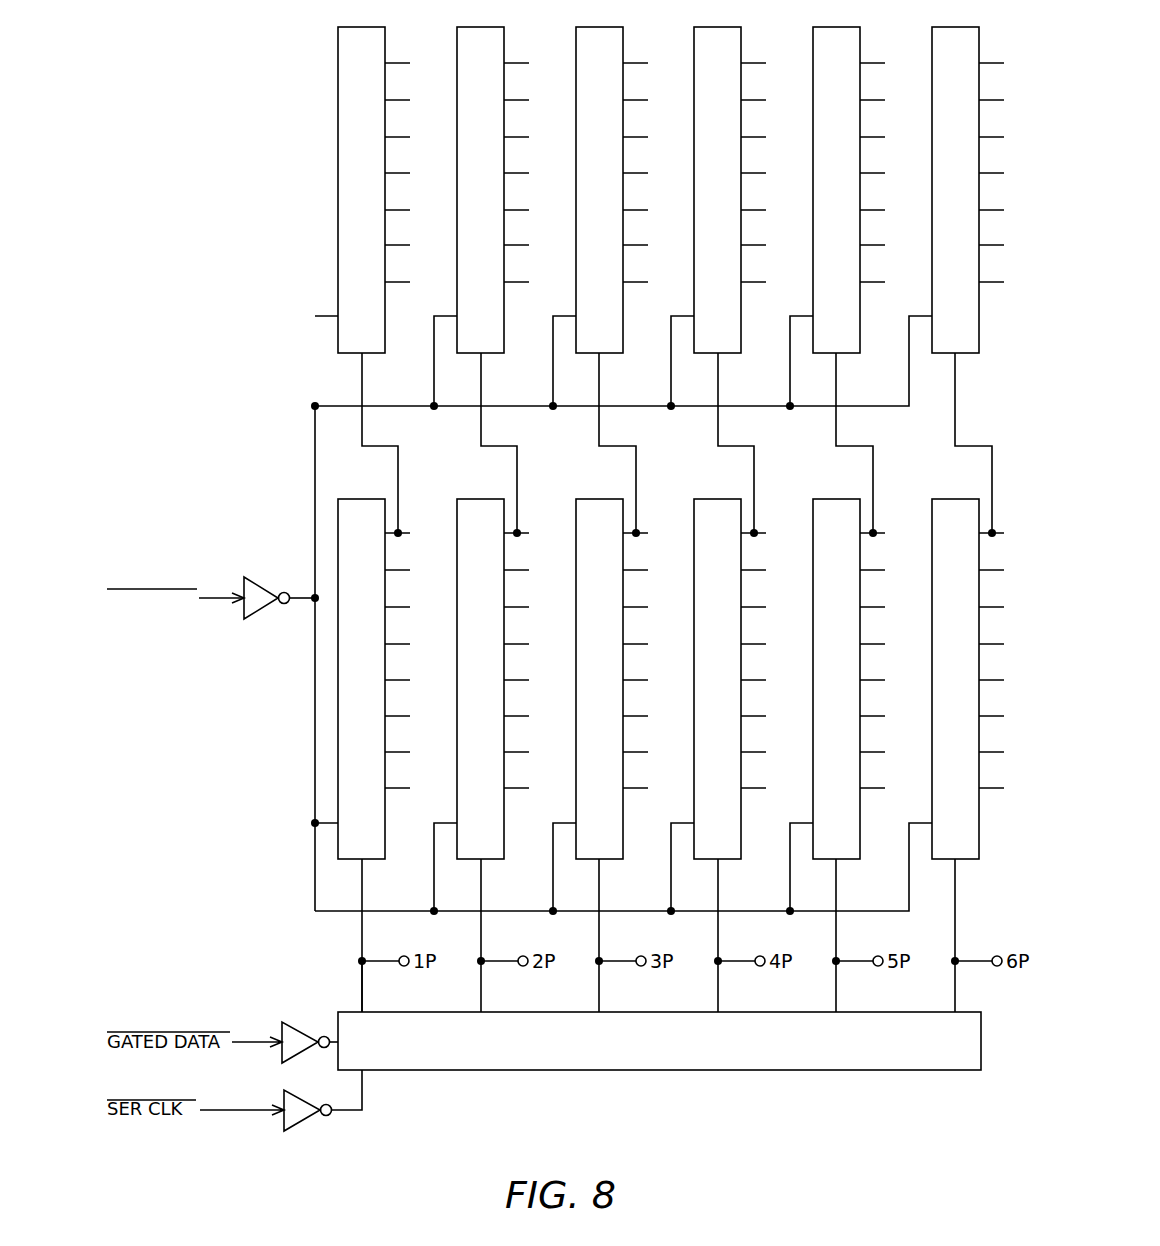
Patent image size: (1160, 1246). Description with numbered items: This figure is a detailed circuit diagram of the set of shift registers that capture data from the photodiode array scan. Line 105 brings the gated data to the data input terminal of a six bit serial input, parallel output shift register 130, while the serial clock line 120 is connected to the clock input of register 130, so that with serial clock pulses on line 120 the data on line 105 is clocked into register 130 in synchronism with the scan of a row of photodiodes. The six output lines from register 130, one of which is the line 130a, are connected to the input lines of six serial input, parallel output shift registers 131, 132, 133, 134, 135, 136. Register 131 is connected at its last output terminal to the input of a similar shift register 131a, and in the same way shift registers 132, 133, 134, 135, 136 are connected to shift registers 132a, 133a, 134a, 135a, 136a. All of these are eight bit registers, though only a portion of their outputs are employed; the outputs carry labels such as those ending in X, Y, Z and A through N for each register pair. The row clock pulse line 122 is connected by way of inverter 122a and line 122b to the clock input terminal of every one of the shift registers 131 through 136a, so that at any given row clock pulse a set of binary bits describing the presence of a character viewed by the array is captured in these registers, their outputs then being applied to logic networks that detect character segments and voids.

The shift register 131a is at (381, 55).
The shift register 132a is at (500, 55).
The shift register 133a is at (619, 55).
The shift register 134a is at (737, 55).
The shift register 135a is at (856, 55).
The shift register 136a is at (975, 55).
The serial input, parallel output shift register 131 is at (379, 527).
The serial input, parallel output shift register 132 is at (498, 527).
The serial input, parallel output shift register 133 is at (617, 527).
The serial input, parallel output shift register 134 is at (735, 527).
The serial input, parallel output shift register 135 is at (854, 527).
The serial input, parallel output shift register 136 is at (973, 527).
The six bit serial input, parallel output shift register 130 is at (638, 1052).
The output line of shift register 130a is at (362, 990).
The row clock pulse line 122 is at (215, 597).
The inverter 122a is at (283, 591).
The line 122b is at (313, 666).
The line 105 is at (252, 1040).
The serial clock line 120 is at (245, 1112).